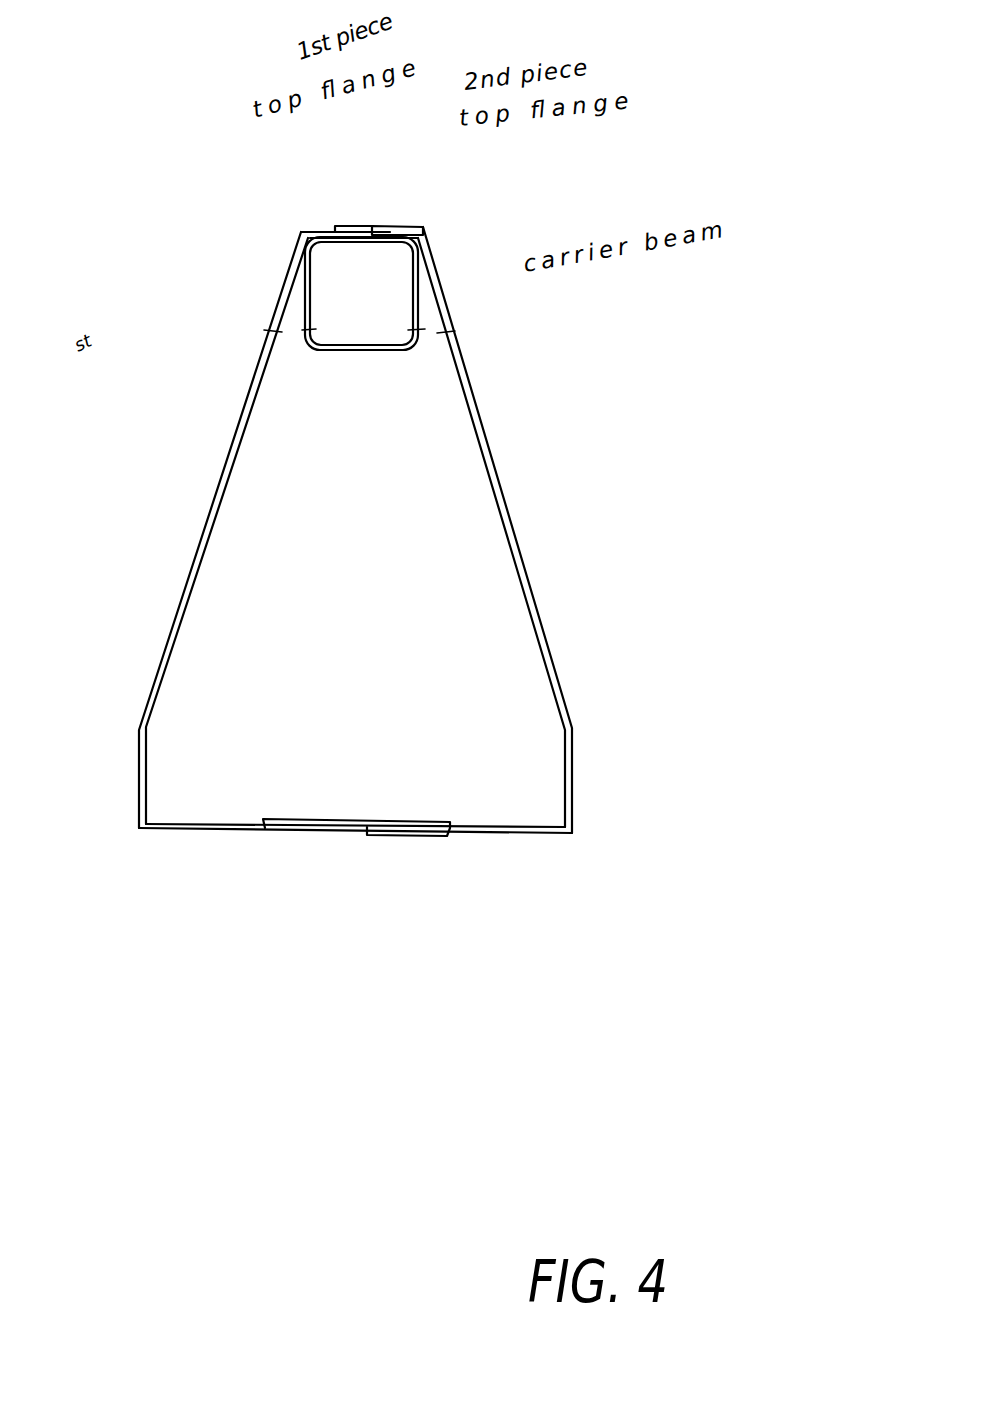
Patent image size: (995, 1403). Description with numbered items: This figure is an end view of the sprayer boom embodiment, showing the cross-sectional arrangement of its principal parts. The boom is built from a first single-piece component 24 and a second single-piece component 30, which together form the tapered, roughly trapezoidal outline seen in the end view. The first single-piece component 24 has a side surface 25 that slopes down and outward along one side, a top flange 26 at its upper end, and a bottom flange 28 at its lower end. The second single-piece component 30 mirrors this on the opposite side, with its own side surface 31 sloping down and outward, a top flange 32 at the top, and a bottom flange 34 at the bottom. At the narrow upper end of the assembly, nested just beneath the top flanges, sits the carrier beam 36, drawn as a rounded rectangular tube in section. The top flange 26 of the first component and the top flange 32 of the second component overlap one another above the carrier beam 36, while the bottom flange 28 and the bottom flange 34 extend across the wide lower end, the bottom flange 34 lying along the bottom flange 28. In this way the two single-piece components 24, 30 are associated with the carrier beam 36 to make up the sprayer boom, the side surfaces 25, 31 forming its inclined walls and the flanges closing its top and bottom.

The first single-piece component 24 is at (253, 382).
The side surface 25 is at (197, 554).
The top flange 26 is at (348, 230).
The bottom flange 28 is at (295, 838).
The second single-piece component 30 is at (470, 367).
The side surface 31 is at (523, 557).
The top flange 32 is at (376, 227).
The bottom flange 34 is at (376, 837).
The carrier beam 36 is at (418, 282).